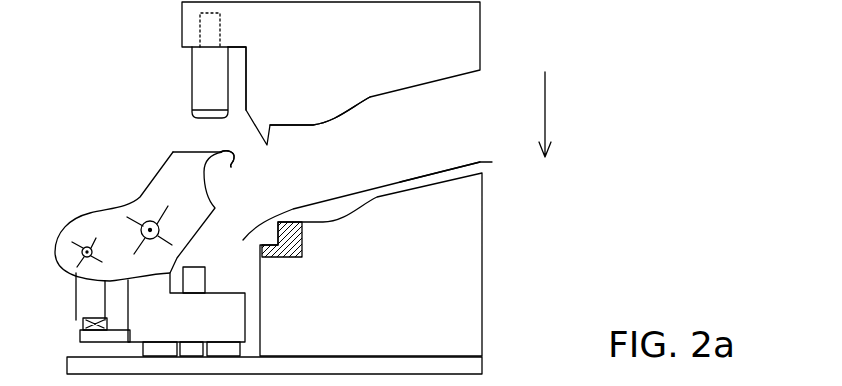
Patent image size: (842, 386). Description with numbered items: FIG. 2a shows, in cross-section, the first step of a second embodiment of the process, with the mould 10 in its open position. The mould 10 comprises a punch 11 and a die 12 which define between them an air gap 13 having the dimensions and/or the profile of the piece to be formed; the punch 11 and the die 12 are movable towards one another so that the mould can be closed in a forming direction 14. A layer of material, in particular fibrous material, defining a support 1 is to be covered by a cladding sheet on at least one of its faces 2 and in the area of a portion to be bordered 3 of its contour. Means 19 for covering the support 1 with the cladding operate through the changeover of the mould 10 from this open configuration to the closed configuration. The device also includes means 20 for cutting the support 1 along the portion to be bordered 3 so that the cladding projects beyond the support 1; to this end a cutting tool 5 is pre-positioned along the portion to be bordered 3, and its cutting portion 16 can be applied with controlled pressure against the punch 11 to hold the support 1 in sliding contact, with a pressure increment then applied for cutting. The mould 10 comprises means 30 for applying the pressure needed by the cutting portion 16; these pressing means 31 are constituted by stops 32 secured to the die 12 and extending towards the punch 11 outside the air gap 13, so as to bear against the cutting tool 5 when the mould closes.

The support 1 is at (480, 162).
The face 2 is at (388, 183).
The portion to be bordered 3 is at (256, 214).
The cutting tool 5 is at (193, 161).
The mould 10 is at (353, 246).
The punch 11 is at (483, 310).
The die 12 is at (458, 24).
The air gap 13 is at (335, 147).
The forming direction 14 is at (547, 101).
The cutting portion 16 is at (231, 167).
The covering means 19 is at (508, 225).
The cutting means 20 is at (118, 199).
The pressure applying means 30 is at (153, 40).
The pressing means 31 is at (167, 94).
The stops 32 is at (213, 75).